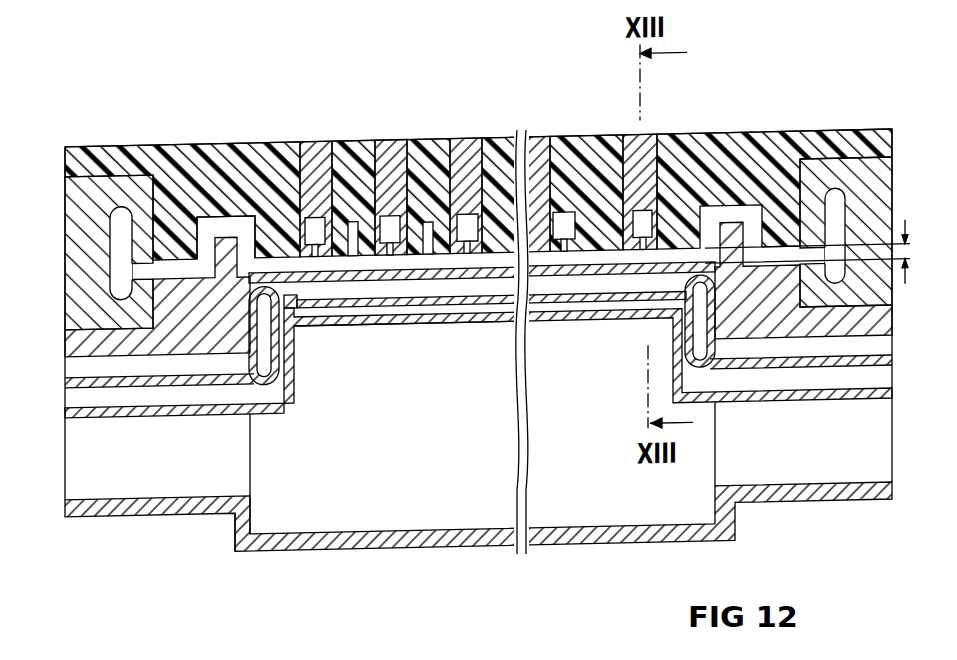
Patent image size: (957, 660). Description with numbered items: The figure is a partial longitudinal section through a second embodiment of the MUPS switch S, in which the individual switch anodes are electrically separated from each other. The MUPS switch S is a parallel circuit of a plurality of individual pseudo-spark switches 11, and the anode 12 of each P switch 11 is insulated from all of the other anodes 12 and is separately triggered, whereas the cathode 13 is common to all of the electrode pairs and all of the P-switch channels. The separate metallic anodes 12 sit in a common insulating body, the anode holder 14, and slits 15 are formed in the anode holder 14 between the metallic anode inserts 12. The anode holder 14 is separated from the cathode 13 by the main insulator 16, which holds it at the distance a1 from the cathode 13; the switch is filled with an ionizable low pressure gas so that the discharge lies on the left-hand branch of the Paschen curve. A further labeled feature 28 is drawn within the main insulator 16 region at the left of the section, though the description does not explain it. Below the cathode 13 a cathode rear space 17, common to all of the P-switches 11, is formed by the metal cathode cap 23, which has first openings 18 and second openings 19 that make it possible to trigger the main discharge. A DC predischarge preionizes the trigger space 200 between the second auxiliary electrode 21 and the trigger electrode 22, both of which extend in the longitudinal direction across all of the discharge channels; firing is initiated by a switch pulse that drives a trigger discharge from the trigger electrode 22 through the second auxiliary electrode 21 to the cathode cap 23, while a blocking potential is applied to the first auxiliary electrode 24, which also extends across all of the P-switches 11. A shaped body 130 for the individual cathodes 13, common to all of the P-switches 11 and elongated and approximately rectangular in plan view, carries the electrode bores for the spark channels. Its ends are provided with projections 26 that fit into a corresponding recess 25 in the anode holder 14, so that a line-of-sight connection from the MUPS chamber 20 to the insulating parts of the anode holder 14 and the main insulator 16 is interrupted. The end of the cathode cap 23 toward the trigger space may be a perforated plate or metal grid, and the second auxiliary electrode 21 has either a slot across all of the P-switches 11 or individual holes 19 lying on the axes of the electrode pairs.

The pseudo-spark switch 11 is at (452, 263).
The anode 12 is at (316, 156).
The cathode 13 is at (418, 288).
The anode holder 14 is at (176, 162).
The slit 15 is at (356, 211).
The main insulator 16 is at (80, 212).
The cathode rear space 17 is at (344, 323).
The first opening 18 is at (454, 332).
The second opening 19 is at (297, 314).
The MUPS chamber 20 is at (442, 417).
The second auxiliary electrode 21 is at (604, 332).
The trigger electrode 22 is at (608, 547).
The cathode cap 23 is at (548, 315).
The first auxiliary electrode 24 is at (202, 391).
The recess 25 is at (227, 275).
The projection 26 is at (213, 248).
The channel 28 is at (112, 266).
The shaped body 130 is at (710, 141).
The trigger space 200 is at (413, 528).
The MUPS switch S is at (225, 523).
The distance a1 is at (824, 253).